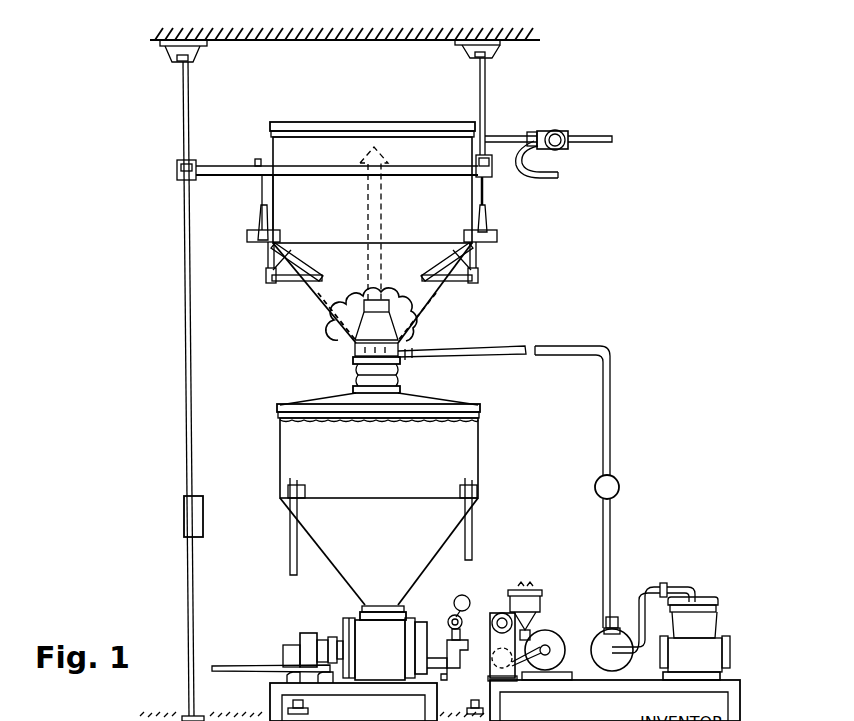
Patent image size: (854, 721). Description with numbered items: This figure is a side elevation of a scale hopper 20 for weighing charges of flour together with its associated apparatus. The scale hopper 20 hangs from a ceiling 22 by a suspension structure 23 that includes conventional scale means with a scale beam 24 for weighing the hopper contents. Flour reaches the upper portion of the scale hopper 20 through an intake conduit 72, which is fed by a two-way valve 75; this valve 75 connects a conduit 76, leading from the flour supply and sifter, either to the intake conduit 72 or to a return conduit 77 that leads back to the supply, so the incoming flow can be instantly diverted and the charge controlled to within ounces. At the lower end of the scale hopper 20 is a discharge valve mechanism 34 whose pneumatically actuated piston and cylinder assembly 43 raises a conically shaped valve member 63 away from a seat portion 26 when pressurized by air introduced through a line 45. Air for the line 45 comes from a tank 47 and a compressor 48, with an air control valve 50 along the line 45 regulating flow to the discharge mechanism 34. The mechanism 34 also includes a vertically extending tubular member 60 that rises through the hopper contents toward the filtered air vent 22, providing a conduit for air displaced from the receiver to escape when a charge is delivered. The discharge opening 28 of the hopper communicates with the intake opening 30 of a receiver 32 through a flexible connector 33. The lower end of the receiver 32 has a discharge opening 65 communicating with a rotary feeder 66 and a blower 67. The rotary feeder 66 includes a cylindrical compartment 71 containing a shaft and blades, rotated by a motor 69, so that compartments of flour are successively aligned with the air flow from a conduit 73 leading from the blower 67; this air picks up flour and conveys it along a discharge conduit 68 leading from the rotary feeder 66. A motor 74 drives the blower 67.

The scale hopper 20 is at (274, 122).
The ceiling 22 is at (345, 122).
The suspension structure 23 is at (176, 170).
The scale beam 24 is at (203, 512).
The seat portion 26 is at (406, 322).
The discharge opening 28 is at (354, 362).
The intake opening 30 is at (398, 379).
The receiver 32 is at (368, 473).
The flexible connector 33 is at (354, 390).
The discharge valve mechanism 34 is at (386, 306).
The piston and cylinder assembly 43 is at (356, 352).
The air line 45 is at (490, 352).
The tank 47 is at (602, 640).
The compressor 48 is at (724, 644).
The air control valve 50 is at (618, 482).
The tubular member 60 is at (372, 306).
The valve member 63 is at (345, 322).
The discharge opening 65 is at (368, 608).
The rotary feeder 66 is at (418, 626).
The blower 67 is at (497, 612).
The conduit 68 is at (240, 666).
The motor 69 is at (307, 642).
The cylindrical compartment 71 is at (386, 666).
The intake conduit 72 is at (502, 137).
The conduit 73 is at (452, 668).
The motor 74 is at (548, 634).
The valve 75 is at (564, 128).
The conduit 76 is at (585, 144).
The return conduit 77 is at (540, 172).